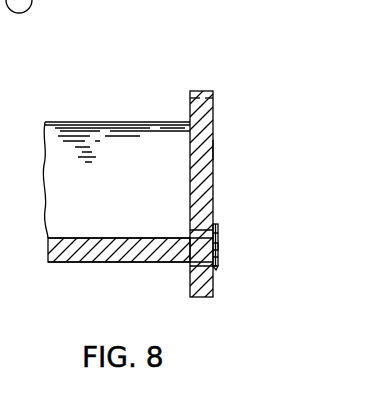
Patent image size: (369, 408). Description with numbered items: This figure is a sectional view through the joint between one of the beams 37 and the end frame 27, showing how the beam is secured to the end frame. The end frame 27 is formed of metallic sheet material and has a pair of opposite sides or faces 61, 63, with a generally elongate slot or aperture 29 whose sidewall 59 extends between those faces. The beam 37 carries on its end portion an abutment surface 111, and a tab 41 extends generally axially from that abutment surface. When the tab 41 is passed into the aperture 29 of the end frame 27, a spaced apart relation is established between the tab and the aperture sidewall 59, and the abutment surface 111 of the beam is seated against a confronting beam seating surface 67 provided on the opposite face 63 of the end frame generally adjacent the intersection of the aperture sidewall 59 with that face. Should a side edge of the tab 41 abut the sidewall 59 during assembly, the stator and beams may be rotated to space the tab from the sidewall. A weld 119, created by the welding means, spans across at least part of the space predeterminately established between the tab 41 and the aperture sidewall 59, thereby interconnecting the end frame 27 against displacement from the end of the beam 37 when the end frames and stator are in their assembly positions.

The end frame 27 is at (197, 91).
The aperture 29 is at (190, 280).
The beam 37 is at (83, 121).
The tab 41 is at (222, 248).
The sidewall 59 is at (214, 268).
The face 61 is at (190, 105).
The face 63 is at (228, 86).
The beam seating surface 67 is at (213, 150).
The abutment surface 111 is at (190, 158).
The weld 119 is at (214, 232).